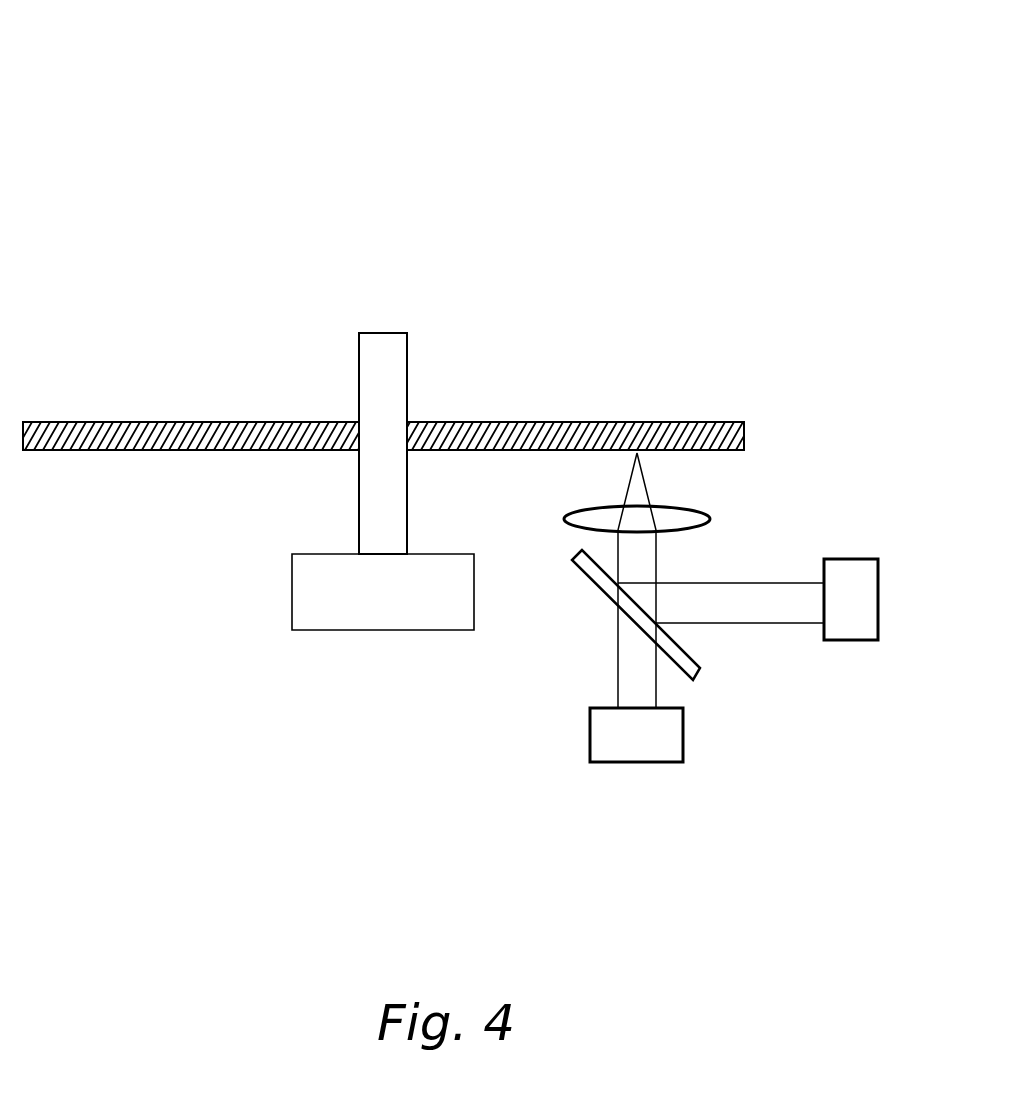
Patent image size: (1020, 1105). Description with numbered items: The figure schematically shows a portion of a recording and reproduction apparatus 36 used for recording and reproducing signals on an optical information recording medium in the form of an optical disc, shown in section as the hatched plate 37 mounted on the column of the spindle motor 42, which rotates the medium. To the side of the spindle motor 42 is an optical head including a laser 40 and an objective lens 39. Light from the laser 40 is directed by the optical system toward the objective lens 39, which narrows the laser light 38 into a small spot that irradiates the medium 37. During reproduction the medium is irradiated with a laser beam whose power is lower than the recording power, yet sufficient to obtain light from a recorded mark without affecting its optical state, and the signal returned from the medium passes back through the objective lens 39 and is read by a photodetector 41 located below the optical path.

The recording and reproduction apparatus 36 is at (228, 215).
The optical disc 37 is at (223, 422).
The light beam 38 is at (637, 487).
The objective lens 39 is at (675, 519).
The laser 40 is at (852, 605).
The photodetector 41 is at (630, 734).
The spindle motor 42 is at (371, 592).